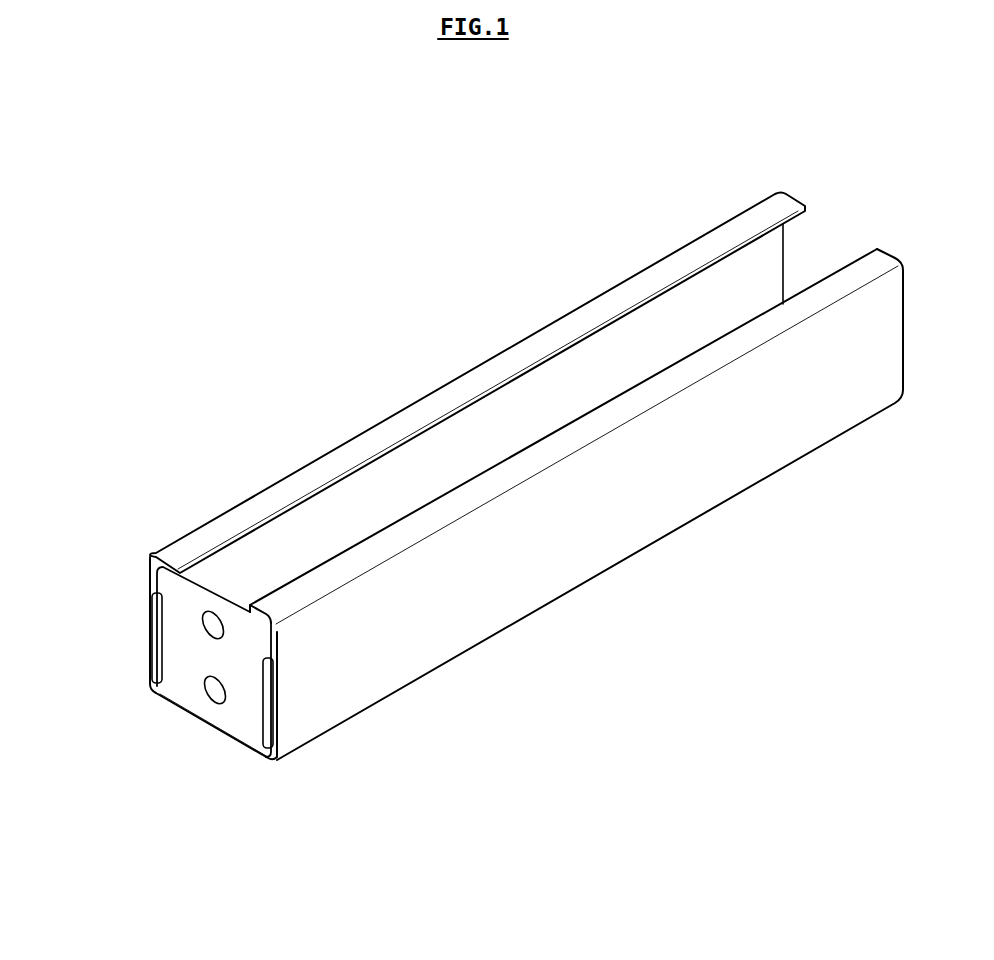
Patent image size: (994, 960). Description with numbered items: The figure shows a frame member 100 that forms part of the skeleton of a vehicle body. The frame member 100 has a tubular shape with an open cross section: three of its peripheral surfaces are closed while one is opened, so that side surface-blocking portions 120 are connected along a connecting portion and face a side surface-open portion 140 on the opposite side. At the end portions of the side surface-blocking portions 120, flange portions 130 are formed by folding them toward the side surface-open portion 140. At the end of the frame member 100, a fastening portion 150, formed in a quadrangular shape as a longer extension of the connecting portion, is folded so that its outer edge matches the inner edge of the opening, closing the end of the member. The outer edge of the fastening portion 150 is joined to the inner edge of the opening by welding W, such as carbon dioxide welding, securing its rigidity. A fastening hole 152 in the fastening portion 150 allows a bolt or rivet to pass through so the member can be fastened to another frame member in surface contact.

The frame member 100 is at (350, 408).
The side surface-blocking portion 120 is at (472, 625).
The flange portion 130 is at (258, 507).
The side surface-open portion 140 is at (639, 352).
The fastening portion 150 is at (177, 672).
The fastening hole 152 is at (207, 702).
The welding W is at (157, 661).